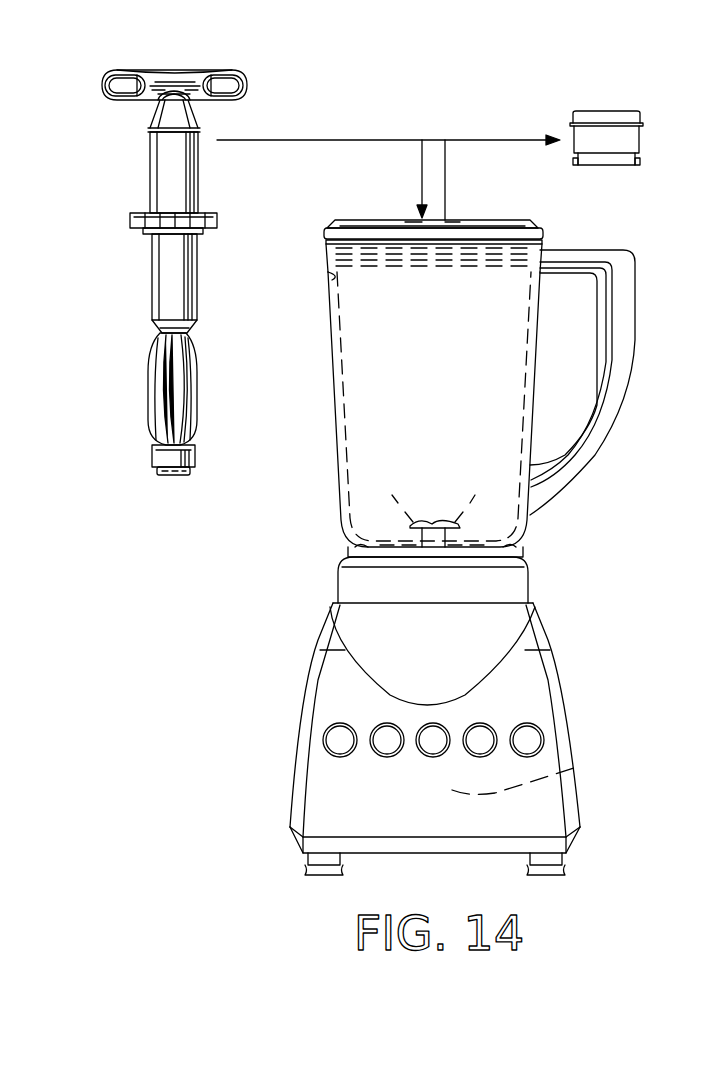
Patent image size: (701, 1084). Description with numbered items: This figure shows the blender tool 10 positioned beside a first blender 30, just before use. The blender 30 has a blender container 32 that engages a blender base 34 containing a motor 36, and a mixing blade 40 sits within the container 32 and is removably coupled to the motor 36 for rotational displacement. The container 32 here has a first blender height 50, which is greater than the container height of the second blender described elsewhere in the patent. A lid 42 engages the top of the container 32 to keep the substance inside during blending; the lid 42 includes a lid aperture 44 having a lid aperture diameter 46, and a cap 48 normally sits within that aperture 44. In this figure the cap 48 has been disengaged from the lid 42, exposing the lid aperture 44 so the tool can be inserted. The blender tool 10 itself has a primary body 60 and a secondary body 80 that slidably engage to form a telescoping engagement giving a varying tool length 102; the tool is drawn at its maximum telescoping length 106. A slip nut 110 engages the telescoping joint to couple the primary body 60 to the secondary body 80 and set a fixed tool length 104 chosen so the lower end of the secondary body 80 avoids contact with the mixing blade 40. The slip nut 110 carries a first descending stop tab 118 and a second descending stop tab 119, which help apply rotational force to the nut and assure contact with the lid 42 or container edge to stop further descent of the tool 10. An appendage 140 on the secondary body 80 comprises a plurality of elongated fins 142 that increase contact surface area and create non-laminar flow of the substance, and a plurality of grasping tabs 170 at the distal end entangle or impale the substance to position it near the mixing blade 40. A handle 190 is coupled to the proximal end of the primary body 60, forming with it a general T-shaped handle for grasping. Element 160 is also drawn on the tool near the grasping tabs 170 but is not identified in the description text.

The blender tool 10 is at (171, 279).
The handle 190 is at (119, 77).
The primary body 60 is at (179, 170).
The fixed tool length 104 is at (200, 158).
The slip nut 110 is at (171, 204).
The first descending stop tab 118 is at (216, 220).
The second descending stop tab 119 is at (170, 213).
The secondary body 80 is at (175, 283).
The varying tool length 102 is at (198, 283).
The maximum telescoping length 106 is at (156, 290).
The appendage 140 is at (177, 389).
The elongated fins 142 is at (197, 385).
The collar 160 is at (144, 486).
The grasping tabs 170 is at (159, 478).
The cap 48 is at (616, 111).
The lid 42 is at (505, 219).
The lid aperture diameter 46 is at (413, 222).
The lid aperture 44 is at (452, 222).
The blender container 32 is at (338, 396).
The first blender height 50 is at (533, 406).
The mixing blade 40 is at (387, 507).
The blender 30 is at (442, 716).
The blender base 34 is at (566, 668).
The motor 36 is at (577, 767).